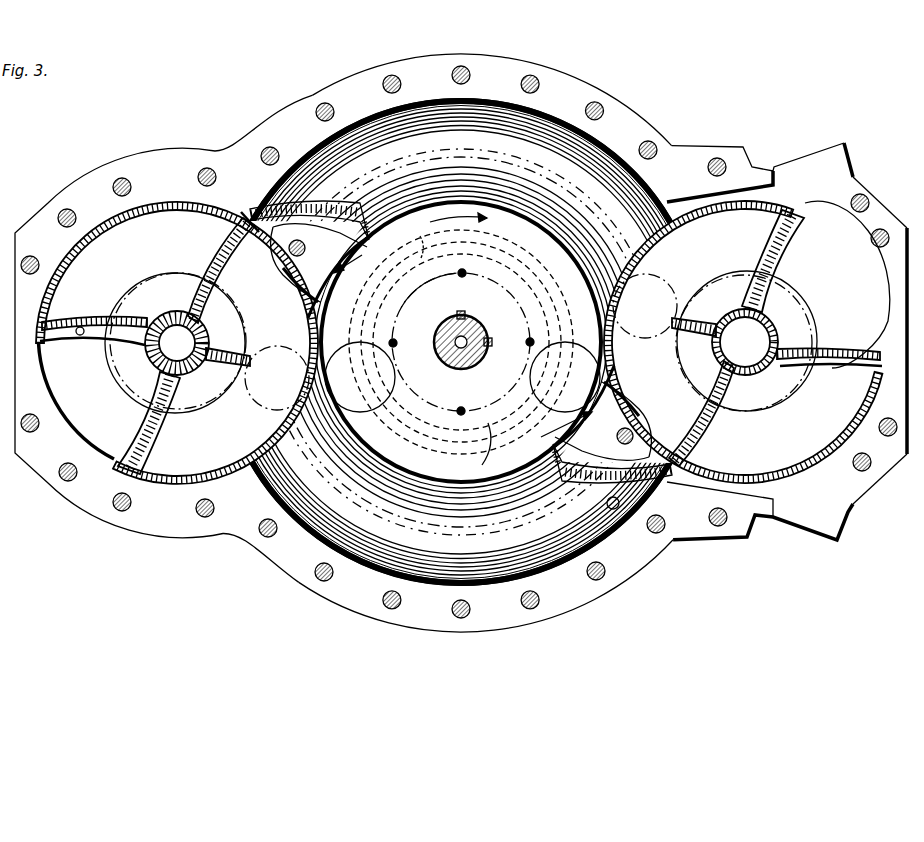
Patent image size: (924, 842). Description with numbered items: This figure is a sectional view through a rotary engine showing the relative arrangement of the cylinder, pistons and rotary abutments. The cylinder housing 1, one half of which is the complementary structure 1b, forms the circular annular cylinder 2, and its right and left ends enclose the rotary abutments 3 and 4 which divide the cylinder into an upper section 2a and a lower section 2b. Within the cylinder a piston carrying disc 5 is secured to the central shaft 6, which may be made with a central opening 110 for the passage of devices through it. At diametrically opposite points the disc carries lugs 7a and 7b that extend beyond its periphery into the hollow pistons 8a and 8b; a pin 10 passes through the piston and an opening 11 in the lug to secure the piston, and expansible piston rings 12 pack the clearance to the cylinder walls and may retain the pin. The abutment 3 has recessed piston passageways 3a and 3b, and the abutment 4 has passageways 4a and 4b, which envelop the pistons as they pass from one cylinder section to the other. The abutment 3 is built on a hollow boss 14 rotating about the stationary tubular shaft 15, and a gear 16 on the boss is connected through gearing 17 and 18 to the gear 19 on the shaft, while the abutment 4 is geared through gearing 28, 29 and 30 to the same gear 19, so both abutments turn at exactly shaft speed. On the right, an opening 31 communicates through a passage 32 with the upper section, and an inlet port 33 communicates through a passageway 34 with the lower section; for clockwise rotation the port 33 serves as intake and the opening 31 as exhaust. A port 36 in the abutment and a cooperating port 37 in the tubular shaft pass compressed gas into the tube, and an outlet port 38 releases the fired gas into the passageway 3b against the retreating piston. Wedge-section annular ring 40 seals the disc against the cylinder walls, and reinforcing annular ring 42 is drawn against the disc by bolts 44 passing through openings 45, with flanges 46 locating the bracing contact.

The cylinder housing 1 is at (340, 80).
The complementary housing structure 1b is at (310, 103).
The circular annular cylinder 2 is at (495, 103).
The upper section of cylinder 2a is at (548, 110).
The lower section of cylinder 2b is at (440, 577).
The rotary abutment 3 is at (142, 205).
The piston passageway 3a is at (212, 240).
The piston passageway 3b is at (80, 327).
The rotary abutment 4 is at (886, 372).
The piston passageway 4a is at (782, 232).
The piston passageway 4b is at (700, 453).
The piston carrying disc 5 is at (533, 237).
The central shaft 6 is at (450, 360).
The lug 7a is at (263, 262).
The lug 7b is at (643, 423).
The piston 8a is at (283, 308).
The piston 8b is at (680, 437).
The pin 10 is at (305, 249).
The opening 11 is at (303, 254).
The piston rings 12 is at (463, 352).
The hollow boss 14 is at (183, 377).
The tubular shaft 15 is at (175, 343).
The gear 16 is at (195, 415).
The gearing 17 is at (260, 410).
The gearing 18 is at (367, 422).
The gear 19 is at (497, 407).
The gearing 28 is at (722, 275).
The gearing 29 is at (660, 308).
The gearing 30 is at (585, 341).
The opening 31 is at (800, 163).
The passage 32 is at (693, 197).
The inlet port 33 is at (805, 520).
The passageway 34 is at (700, 497).
The port 36 is at (210, 323).
The cooperating port 37 is at (157, 373).
The outlet port 38 is at (197, 313).
The annular ring 40 is at (566, 292).
The reinforcing annular ring 42 is at (410, 243).
The bolts 44 is at (463, 278).
The openings 45 is at (460, 280).
The flanges 46 is at (483, 455).
The central opening 110 is at (456, 338).